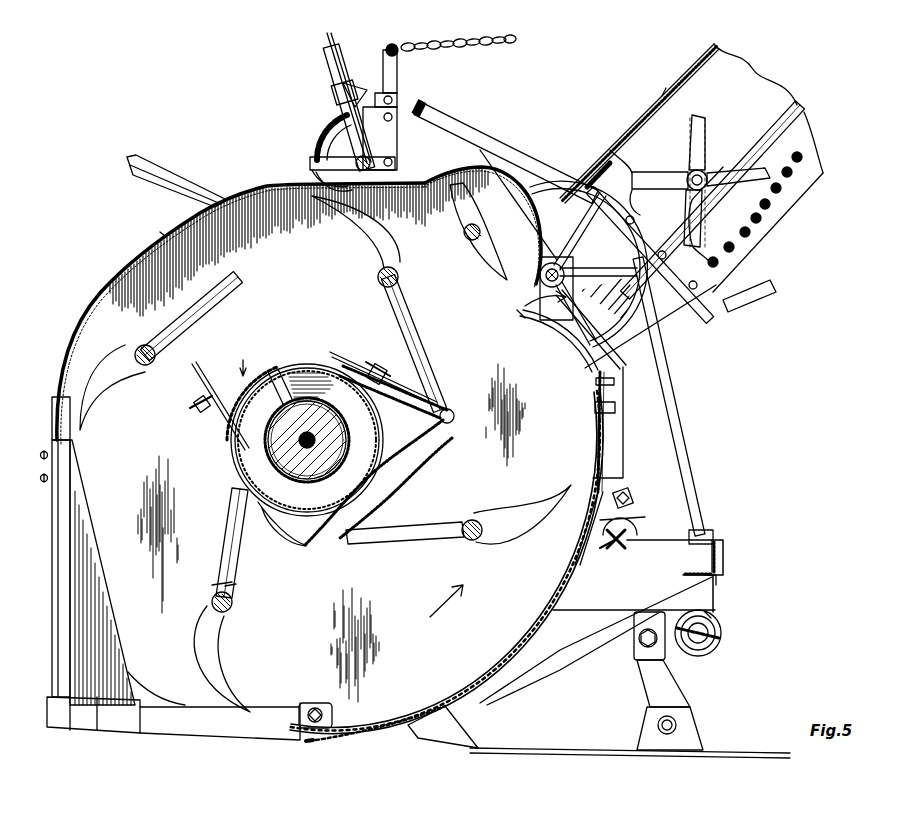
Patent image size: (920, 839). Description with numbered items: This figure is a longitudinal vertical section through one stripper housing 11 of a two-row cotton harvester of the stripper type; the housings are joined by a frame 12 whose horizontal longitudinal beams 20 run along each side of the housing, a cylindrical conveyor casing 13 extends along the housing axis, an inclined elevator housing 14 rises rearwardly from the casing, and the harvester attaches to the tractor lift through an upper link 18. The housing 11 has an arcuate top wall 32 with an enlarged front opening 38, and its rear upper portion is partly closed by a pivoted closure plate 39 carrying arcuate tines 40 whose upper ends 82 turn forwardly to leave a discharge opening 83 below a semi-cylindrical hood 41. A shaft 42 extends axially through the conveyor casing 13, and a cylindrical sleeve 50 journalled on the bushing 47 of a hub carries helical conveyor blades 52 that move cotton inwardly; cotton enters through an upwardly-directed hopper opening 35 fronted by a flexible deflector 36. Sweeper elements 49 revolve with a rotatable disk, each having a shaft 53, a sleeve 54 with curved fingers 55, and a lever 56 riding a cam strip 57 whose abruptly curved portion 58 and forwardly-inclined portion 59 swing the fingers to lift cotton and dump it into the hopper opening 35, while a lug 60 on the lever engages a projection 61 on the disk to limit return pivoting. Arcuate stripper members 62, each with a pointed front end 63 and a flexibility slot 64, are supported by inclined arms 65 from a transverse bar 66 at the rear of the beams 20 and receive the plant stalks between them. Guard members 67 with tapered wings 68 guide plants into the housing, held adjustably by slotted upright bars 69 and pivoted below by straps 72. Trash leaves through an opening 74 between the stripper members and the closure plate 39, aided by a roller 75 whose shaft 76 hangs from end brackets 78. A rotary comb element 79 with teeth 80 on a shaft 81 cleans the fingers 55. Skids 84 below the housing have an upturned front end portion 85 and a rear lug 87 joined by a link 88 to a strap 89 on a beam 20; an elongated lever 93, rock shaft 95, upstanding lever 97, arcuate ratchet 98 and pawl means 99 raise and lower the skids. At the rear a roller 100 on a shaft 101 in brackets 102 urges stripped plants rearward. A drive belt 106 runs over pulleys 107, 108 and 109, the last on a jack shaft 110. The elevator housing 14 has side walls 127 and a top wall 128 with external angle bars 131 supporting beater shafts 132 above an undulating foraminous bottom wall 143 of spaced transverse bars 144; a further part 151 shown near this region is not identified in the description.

The stripper housing 11 is at (268, 183).
The frame 12 is at (682, 540).
The conveyor casing 13 is at (307, 431).
The elevator housing 14 is at (666, 88).
The upper link 18 is at (202, 177).
The beam 20 is at (578, 612).
The top wall 32 is at (160, 232).
The hopper opening 35 is at (232, 357).
The flexible deflector 36 is at (199, 397).
The enlarged opening 38 is at (83, 325).
The closure plate 39 is at (600, 442).
The tines 40 is at (545, 341).
The hood 41 is at (455, 172).
The shaft 42 is at (299, 439).
The bushing 47 is at (330, 443).
The sweeper element 49 is at (498, 545).
The cylindrical sleeve 50 is at (306, 478).
The helical conveyor blades 52 is at (316, 368).
The shaft 53 is at (485, 516).
The sleeve 54 is at (233, 605).
The fingers 55 is at (222, 661).
The lever 56 is at (232, 520).
The cam strip 57 is at (436, 460).
The curved portion 58 is at (302, 548).
The forwardly-inclined portion 59 is at (412, 390).
The lateral lug 60 is at (214, 585).
The projection 61 is at (233, 585).
The stripper members 62 is at (372, 742).
The pointed front end 63 is at (300, 737).
The slot 64 is at (578, 578).
The inclined arms 65 is at (566, 652).
The transverse bar 66 is at (717, 578).
The guard members 67 is at (52, 525).
The wings 68 is at (118, 658).
The upright bars 69 is at (52, 413).
The straps 72 is at (178, 722).
The opening 74 is at (599, 500).
The roller 75 is at (623, 541).
The axial shaft 76 is at (609, 549).
The end brackets 78 is at (633, 507).
The rotary comb element 79 is at (477, 231).
The teeth 80 is at (471, 214).
The shaft 81 is at (481, 230).
The upper ends of tines 82 is at (522, 312).
The discharge opening 83 is at (514, 305).
The skids 84 is at (598, 748).
The front end portion 85 is at (462, 728).
The upstanding lug 87 is at (698, 735).
The link 88 is at (646, 686).
The strap 89 is at (636, 650).
The elongated lever 93 is at (318, 170).
The rock shaft 95 is at (314, 166).
The upstanding lever 97 is at (344, 62).
The arcuate ratchet 98 is at (328, 128).
The pawl means 99 is at (338, 95).
The roller 100 is at (722, 635).
The shaft 101 is at (706, 612).
The end brackets 102 is at (722, 628).
The endless belt 106 is at (672, 440).
The pulley 107 is at (605, 517).
The pulley 108 is at (700, 645).
The pulley 109 is at (588, 264).
The jack shaft 110 is at (552, 263).
The side walls 127 is at (730, 66).
The top wall 128 is at (638, 122).
The angle bars 131 is at (803, 108).
The beater shaft 132 is at (690, 170).
The foraminous bottom wall 143 is at (790, 205).
The transverse bars 144 is at (812, 148).
The bracket 151 is at (758, 300).